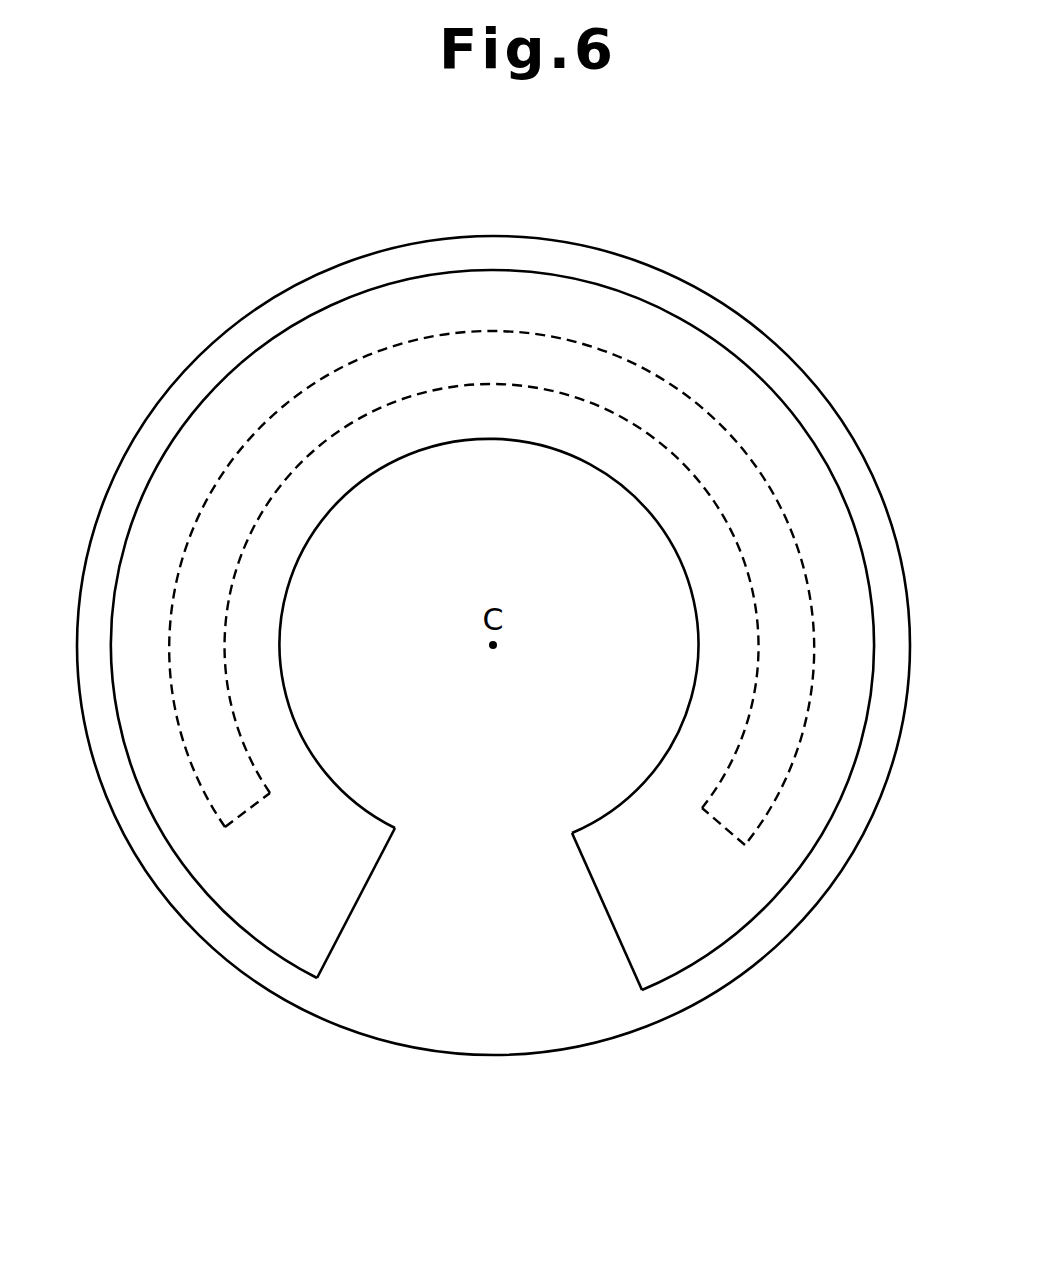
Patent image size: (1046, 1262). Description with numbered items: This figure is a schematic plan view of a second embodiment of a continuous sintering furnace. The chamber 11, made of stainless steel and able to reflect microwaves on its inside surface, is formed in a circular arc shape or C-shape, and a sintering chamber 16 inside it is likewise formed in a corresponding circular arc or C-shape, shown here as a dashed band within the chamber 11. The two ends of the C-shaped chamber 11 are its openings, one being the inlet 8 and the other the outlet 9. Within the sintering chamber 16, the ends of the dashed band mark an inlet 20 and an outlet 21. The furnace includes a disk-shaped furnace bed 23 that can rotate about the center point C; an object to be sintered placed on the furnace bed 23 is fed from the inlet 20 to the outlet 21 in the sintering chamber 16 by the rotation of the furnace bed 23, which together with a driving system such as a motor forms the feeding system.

The inlet 8 is at (360, 900).
The outlet 9 is at (602, 908).
The chamber 11 is at (712, 333).
The sintering chamber 16 is at (662, 440).
The inlet 20 is at (250, 812).
The outlet 21 is at (723, 832).
The furnace bed 23 is at (480, 1045).